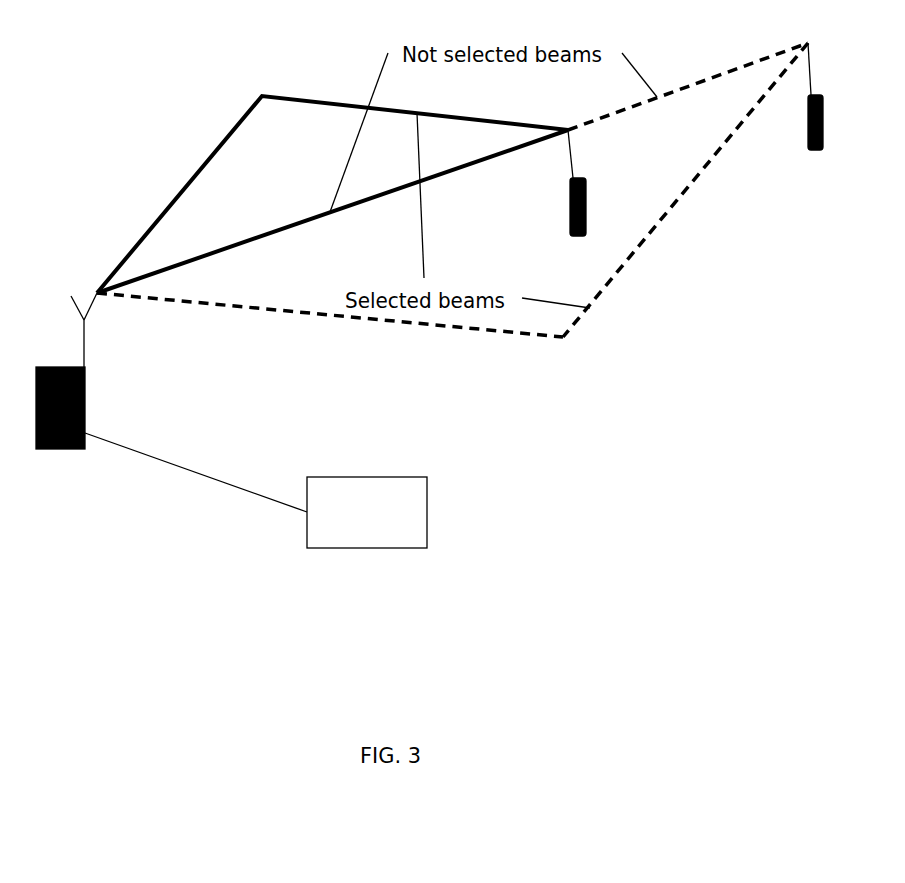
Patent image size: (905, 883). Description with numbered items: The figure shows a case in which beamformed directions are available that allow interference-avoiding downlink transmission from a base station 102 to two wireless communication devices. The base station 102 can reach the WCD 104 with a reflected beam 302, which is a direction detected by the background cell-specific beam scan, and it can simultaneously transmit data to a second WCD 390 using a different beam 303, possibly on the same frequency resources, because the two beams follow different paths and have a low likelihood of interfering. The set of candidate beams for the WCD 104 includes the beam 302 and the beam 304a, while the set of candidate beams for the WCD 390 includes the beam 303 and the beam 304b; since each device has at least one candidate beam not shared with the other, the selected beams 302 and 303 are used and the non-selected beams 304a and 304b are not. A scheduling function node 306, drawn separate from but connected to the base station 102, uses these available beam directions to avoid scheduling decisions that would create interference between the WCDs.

The base station 102 is at (85, 413).
The WCD 104 is at (587, 182).
The WCD 390 is at (808, 142).
The beam 302 is at (235, 123).
The beam 303 is at (563, 341).
The beam 304a is at (293, 232).
The beam 304b is at (753, 64).
The scheduling function node 306 is at (374, 480).